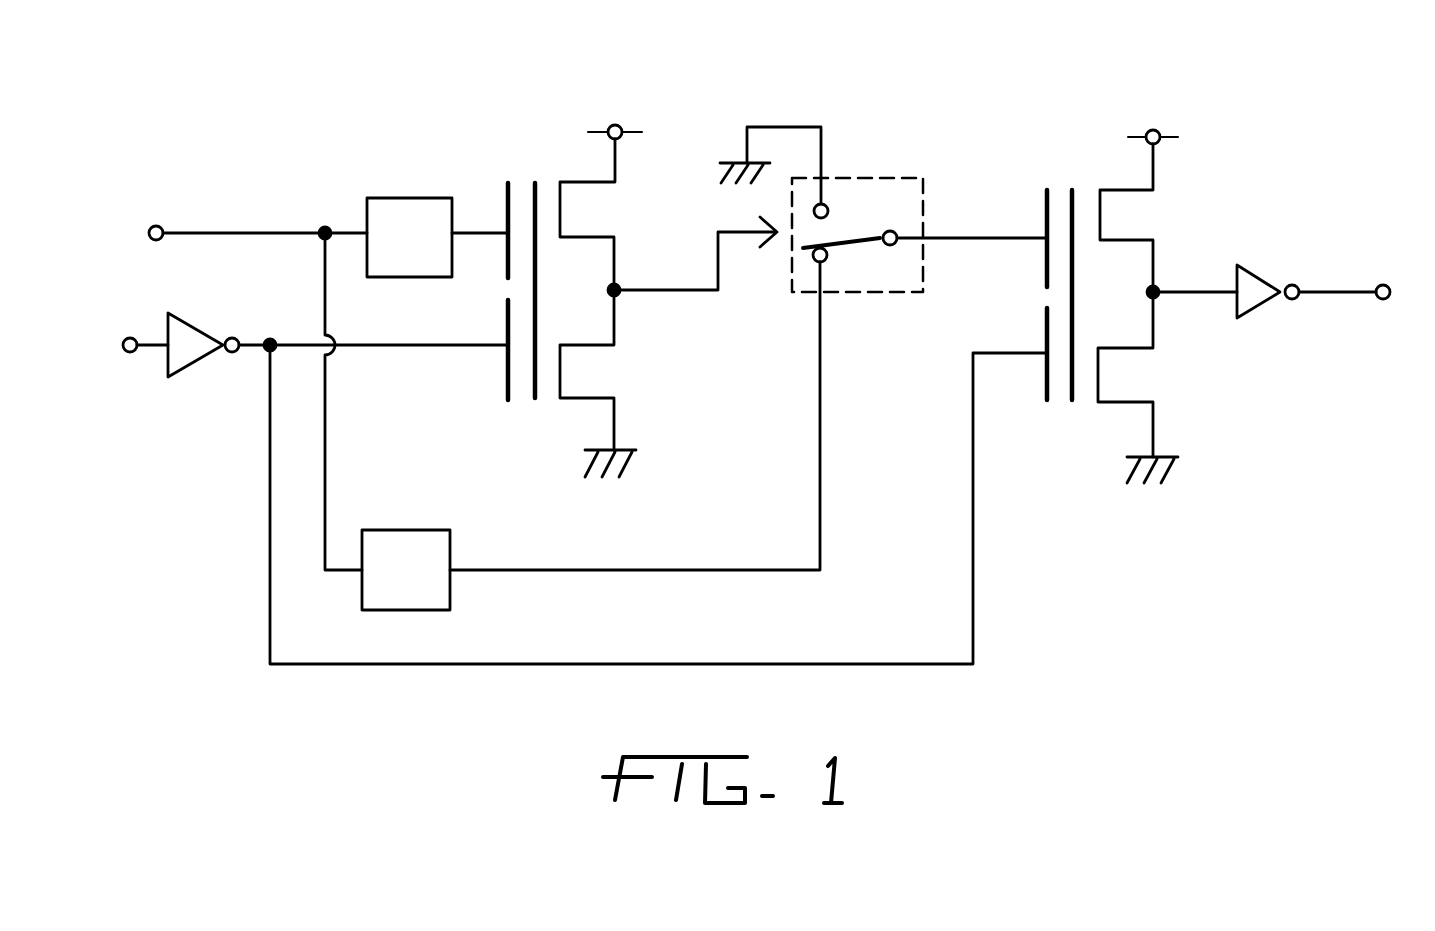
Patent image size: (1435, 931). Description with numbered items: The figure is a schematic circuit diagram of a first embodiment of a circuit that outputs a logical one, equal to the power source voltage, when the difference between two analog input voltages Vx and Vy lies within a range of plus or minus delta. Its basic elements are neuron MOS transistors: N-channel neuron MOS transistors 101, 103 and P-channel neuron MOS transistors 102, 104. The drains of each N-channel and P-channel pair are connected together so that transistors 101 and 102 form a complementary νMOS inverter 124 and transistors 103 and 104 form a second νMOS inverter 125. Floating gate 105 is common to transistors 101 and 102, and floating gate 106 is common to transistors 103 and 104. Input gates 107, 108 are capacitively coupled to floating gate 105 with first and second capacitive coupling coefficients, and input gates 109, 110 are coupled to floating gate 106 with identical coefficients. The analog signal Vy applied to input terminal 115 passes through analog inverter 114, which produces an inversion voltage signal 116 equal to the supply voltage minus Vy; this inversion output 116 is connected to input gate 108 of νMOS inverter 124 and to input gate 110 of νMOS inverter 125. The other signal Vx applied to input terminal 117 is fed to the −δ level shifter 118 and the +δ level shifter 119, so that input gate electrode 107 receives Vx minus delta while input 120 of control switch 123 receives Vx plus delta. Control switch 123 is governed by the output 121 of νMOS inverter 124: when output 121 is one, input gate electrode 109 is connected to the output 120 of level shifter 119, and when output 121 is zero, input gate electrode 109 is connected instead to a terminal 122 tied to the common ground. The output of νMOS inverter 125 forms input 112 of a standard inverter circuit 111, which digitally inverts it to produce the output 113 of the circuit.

The N-channel neuron MOS transistor 101 is at (607, 375).
The P-channel neuron MOS transistor 102 is at (604, 208).
The N-channel neuron MOS transistor 103 is at (1155, 385).
The P-channel neuron MOS transistor 104 is at (1157, 210).
The floating gate 105 is at (536, 183).
The floating gate 106 is at (1072, 190).
The input gate 107 is at (507, 184).
The input gate 108 is at (507, 366).
The input gate 109 is at (1047, 190).
The input gate 110 is at (1040, 377).
The standard inverter circuit 111 is at (1262, 270).
The input 112 is at (1190, 296).
The output 113 is at (1355, 297).
The analog inverter 114 is at (196, 330).
The input terminal 115 is at (130, 353).
The inversion voltage signal 116 is at (256, 350).
The input terminal 117 is at (157, 226).
The −δ level shifter 118 is at (408, 198).
The +δ level shifter 119 is at (405, 530).
The input of control switch 120 is at (828, 258).
The output of νMOS inverter 121 is at (692, 256).
The terminal 122 is at (828, 206).
The control switch 123 is at (821, 207).
The νMOS inverter 124 is at (500, 214).
The νMOS inverter 125 is at (1064, 237).